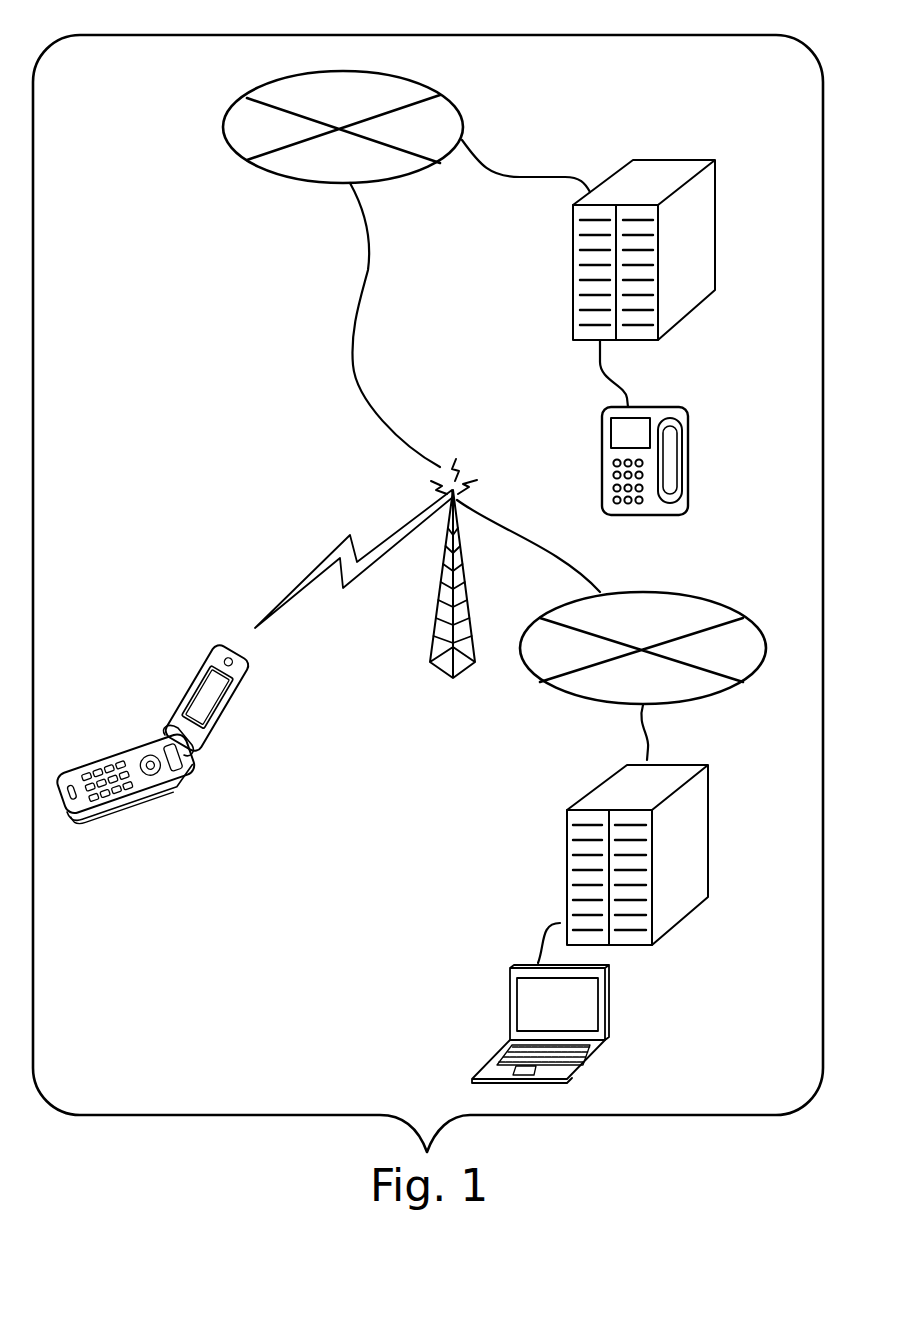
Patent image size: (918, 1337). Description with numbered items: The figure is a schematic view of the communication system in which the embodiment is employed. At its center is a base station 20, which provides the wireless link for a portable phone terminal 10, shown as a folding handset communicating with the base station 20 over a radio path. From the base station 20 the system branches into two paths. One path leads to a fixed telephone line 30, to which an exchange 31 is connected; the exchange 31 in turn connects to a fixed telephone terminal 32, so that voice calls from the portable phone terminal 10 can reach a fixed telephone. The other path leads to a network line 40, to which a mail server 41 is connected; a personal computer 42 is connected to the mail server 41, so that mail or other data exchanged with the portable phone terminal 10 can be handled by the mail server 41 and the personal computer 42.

The portable phone terminal 10 is at (172, 693).
The base station 20 is at (403, 491).
The fixed telephone line 30 is at (455, 112).
The exchange 31 is at (655, 160).
The fixed telephone terminal 32 is at (602, 438).
The network line 40 is at (760, 628).
The mail server 41 is at (683, 762).
The personal computer 42 is at (610, 990).